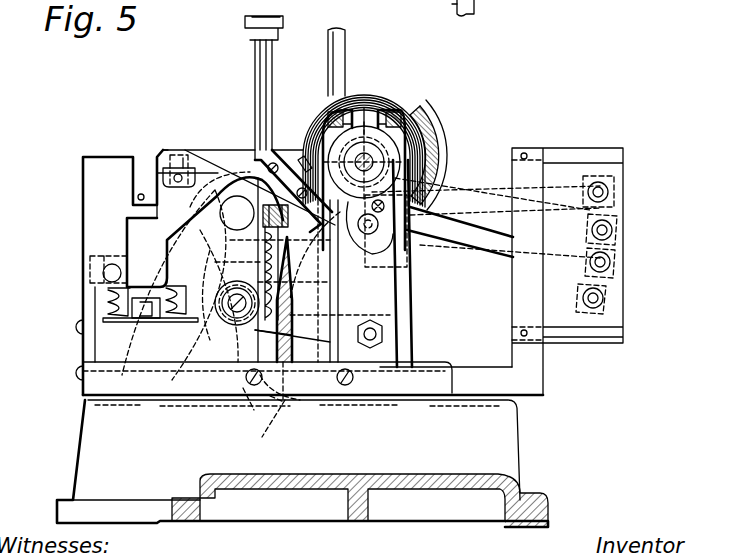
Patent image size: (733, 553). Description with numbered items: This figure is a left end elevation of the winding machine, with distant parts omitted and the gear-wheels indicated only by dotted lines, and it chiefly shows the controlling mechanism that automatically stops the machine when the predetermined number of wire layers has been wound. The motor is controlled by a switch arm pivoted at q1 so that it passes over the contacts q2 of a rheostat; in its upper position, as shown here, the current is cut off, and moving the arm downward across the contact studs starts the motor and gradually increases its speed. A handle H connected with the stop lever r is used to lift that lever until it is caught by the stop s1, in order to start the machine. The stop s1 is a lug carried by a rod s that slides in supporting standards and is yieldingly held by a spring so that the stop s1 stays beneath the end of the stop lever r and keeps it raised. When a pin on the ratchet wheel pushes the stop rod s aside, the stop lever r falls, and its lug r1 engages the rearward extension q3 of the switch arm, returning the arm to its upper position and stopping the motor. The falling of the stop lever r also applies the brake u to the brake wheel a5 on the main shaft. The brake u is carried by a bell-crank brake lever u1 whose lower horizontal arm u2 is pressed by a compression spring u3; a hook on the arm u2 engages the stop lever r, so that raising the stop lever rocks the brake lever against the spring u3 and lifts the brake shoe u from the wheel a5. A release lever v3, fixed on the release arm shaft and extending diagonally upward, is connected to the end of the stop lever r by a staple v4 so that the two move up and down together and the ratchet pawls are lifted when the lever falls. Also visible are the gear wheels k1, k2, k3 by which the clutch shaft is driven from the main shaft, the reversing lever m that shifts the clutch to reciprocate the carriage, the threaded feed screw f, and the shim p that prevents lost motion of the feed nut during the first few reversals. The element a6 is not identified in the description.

The handle H is at (253, 82).
The stop lever r is at (177, 155).
The release lever v3 is at (180, 173).
The staple v4 is at (198, 173).
The stop rod s is at (133, 170).
The stop s1 is at (150, 180).
The lug r1 is at (303, 157).
The brake wheel a5 is at (372, 113).
The gear wheel k1 is at (417, 126).
The gear wheel k2 is at (486, 218).
The gear wheel k3 is at (280, 406).
The brake u is at (286, 294).
The bell-crank brake lever u1 is at (412, 258).
The lower horizontal arm u2 is at (283, 322).
The compression spring u3 is at (288, 240).
The pivot q1 is at (348, 250).
The contacts q2 is at (600, 300).
The rearward extension q3 is at (263, 236).
The shim p is at (178, 204).
The feed screw f is at (312, 179).
The reversing lever m is at (188, 294).
The pin base a6 is at (263, 406).